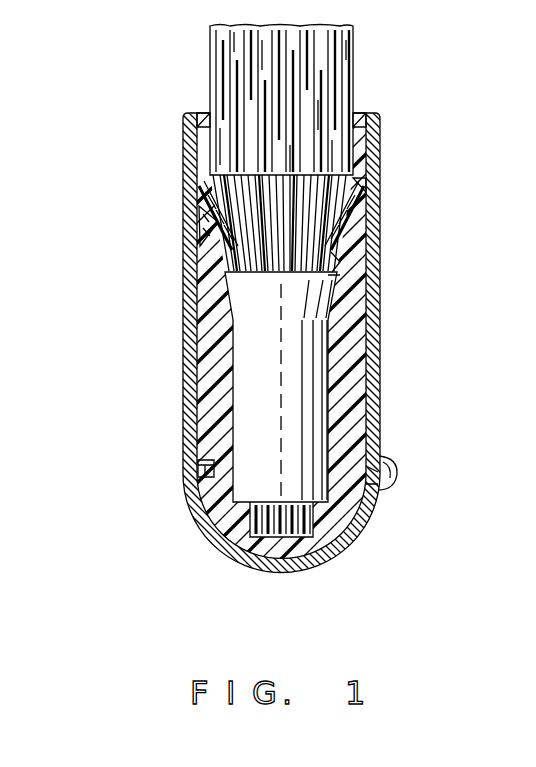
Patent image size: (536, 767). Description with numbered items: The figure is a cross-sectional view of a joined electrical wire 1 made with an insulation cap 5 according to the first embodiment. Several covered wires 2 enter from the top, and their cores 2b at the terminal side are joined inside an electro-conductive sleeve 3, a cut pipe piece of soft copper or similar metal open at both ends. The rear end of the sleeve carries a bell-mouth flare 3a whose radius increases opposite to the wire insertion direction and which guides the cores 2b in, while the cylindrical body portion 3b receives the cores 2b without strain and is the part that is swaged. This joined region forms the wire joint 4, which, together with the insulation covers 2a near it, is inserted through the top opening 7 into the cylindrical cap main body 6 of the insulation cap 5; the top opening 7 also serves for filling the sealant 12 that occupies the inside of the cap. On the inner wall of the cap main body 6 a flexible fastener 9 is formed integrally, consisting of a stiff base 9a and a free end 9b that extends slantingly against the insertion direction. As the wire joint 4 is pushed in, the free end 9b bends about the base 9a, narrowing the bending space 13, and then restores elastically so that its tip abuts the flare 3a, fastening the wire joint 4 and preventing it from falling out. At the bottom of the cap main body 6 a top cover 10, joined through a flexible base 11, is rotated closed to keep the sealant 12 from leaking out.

The joined electrical wire 1 is at (152, 338).
The covered wires 2 is at (208, 66).
The insulation covers 2a is at (350, 103).
The cores 2b is at (293, 230).
The electro-conductive sleeve 3 is at (312, 373).
The flare 3a is at (346, 318).
The body portion 3b is at (350, 505).
The wire joint 4 is at (470, 223).
The insulation cap 5 is at (180, 397).
The cap main body 6 is at (186, 298).
The top opening 7 is at (188, 117).
The flexible fastener 9 is at (205, 228).
The base 9a is at (377, 184).
The free end 9b is at (312, 293).
The top cover 10 is at (262, 576).
The flexible base 11 is at (394, 478).
The sealant 12 is at (190, 458).
The bending space 13 is at (198, 224).